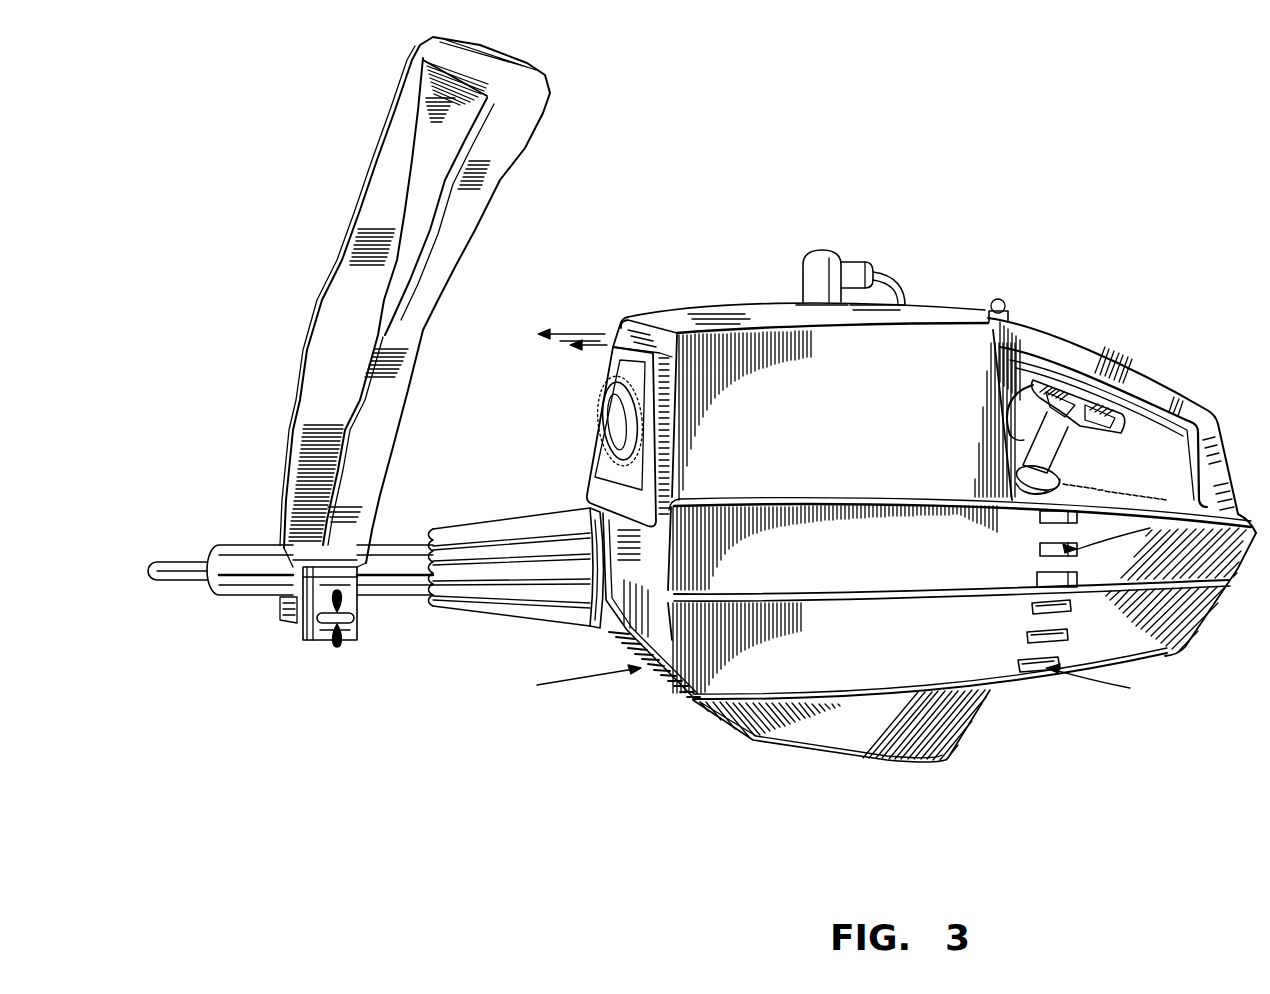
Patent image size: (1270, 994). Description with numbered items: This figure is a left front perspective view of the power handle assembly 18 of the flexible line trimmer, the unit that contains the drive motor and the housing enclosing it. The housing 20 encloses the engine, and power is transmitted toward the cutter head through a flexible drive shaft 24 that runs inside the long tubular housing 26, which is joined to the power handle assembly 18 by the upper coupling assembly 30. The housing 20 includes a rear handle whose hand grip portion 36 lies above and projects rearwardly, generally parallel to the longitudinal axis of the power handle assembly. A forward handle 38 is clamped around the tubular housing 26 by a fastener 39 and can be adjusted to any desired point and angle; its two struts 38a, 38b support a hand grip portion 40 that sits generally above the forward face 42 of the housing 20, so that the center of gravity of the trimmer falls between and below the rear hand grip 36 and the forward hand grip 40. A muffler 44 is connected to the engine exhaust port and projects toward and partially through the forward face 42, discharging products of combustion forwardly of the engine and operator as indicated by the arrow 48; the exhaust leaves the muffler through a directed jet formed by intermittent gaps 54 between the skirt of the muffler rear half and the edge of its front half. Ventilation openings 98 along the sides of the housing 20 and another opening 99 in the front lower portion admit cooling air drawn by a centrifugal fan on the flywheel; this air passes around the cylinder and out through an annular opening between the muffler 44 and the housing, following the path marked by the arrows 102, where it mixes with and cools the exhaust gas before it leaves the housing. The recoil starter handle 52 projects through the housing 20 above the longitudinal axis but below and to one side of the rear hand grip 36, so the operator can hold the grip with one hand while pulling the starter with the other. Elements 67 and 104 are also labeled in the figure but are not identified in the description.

The power handle assembly 18 is at (768, 276).
The housing 20 is at (1170, 648).
The flexible drive shaft 24 is at (185, 582).
The tubular housing 26 is at (246, 597).
The upper coupling assembly 30 is at (500, 620).
The hand grip portion 36 is at (1140, 368).
The forward handle 38 is at (360, 325).
The strut 38a is at (380, 193).
The strut 38b is at (460, 227).
The fastener 39 is at (357, 619).
The hand grip portion 40 is at (485, 64).
The forward face 42 is at (633, 316).
The muffler 44 is at (604, 378).
The arrow 48 is at (537, 336).
The handle 52 is at (1073, 465).
The intermittent gaps 54 is at (994, 303).
The power cord 67 is at (1020, 410).
The ventilation openings 98 is at (1038, 578).
The opening 99 is at (662, 688).
The arrows 102 is at (580, 350).
The air inlet flow 104 is at (612, 330).